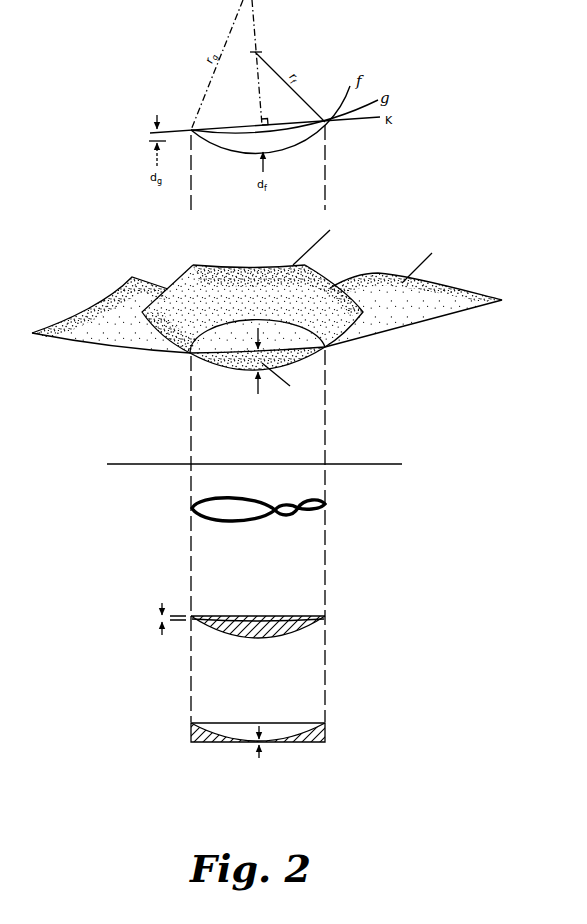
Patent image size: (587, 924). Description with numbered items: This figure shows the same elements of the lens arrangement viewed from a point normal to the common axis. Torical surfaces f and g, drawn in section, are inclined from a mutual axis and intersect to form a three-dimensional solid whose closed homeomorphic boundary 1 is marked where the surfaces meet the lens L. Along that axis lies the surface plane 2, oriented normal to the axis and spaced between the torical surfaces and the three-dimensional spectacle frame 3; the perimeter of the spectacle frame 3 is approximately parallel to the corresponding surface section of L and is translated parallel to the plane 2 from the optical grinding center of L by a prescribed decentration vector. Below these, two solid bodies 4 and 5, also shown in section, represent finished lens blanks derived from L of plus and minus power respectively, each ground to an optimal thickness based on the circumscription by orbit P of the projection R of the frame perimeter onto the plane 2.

The closed homeomorphic boundary 1 is at (326, 348).
The surface plane 2 is at (392, 464).
The spectacle frame 3 is at (326, 504).
The solid body 4 is at (326, 617).
The solid body 5 is at (326, 730).